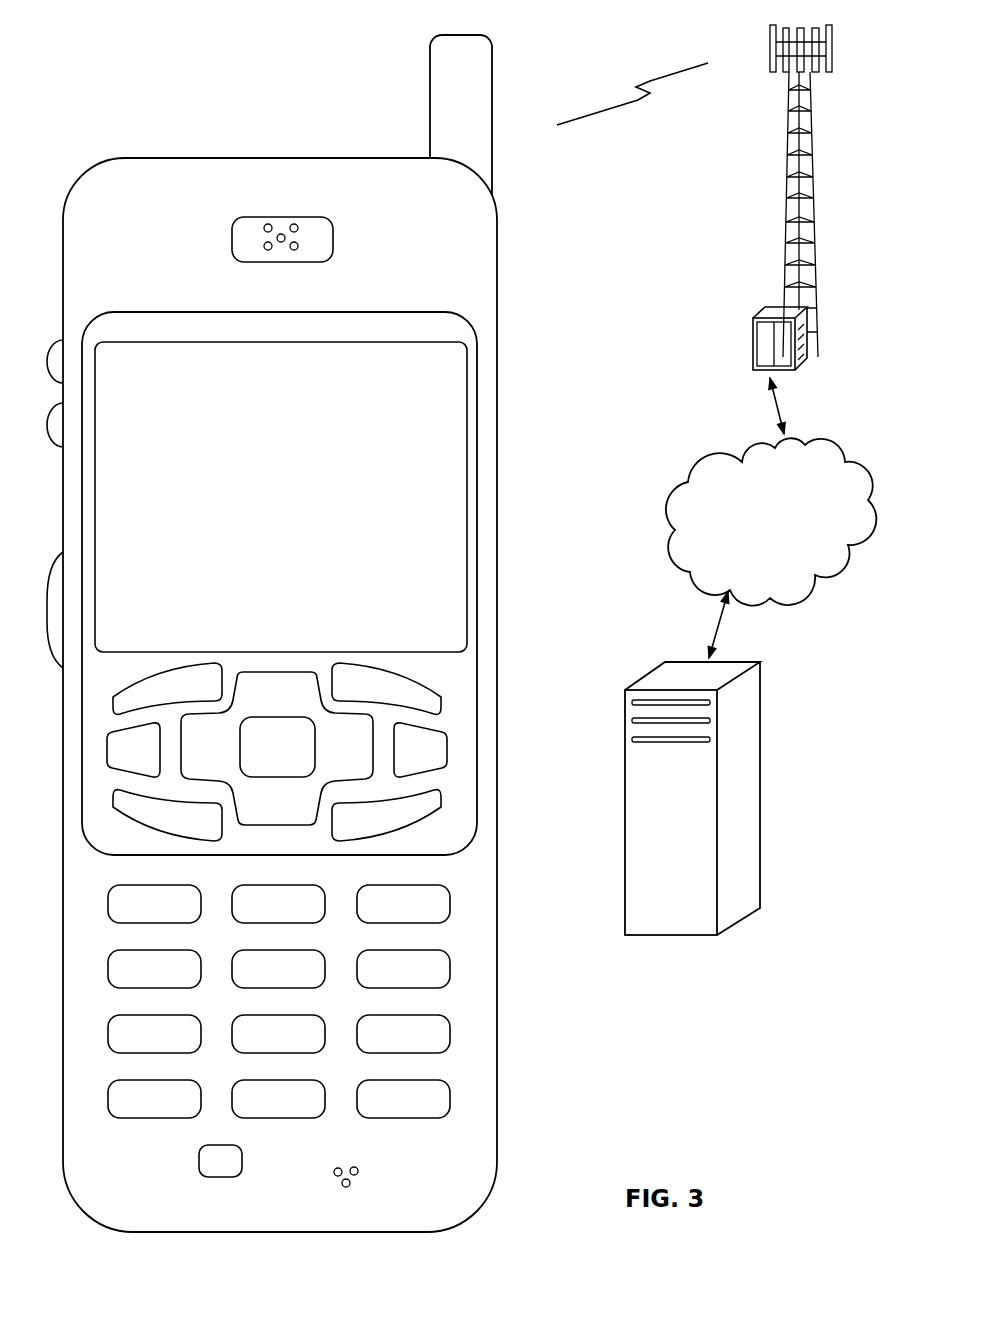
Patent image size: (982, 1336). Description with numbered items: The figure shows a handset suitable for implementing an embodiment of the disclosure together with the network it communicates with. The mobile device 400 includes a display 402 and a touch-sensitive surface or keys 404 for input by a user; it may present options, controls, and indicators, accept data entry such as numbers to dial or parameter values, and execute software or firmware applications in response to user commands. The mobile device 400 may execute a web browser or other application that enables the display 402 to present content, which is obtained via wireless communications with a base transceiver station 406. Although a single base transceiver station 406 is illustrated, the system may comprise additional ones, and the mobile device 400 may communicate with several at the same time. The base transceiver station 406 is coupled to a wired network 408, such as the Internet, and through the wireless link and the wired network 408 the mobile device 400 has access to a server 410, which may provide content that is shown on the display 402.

The mobile device 400 is at (118, 1232).
The display 402 is at (470, 354).
The keys 404 is at (506, 1128).
The base transceiver station 406 is at (783, 211).
The wired network 408 is at (690, 572).
The server 410 is at (672, 935).